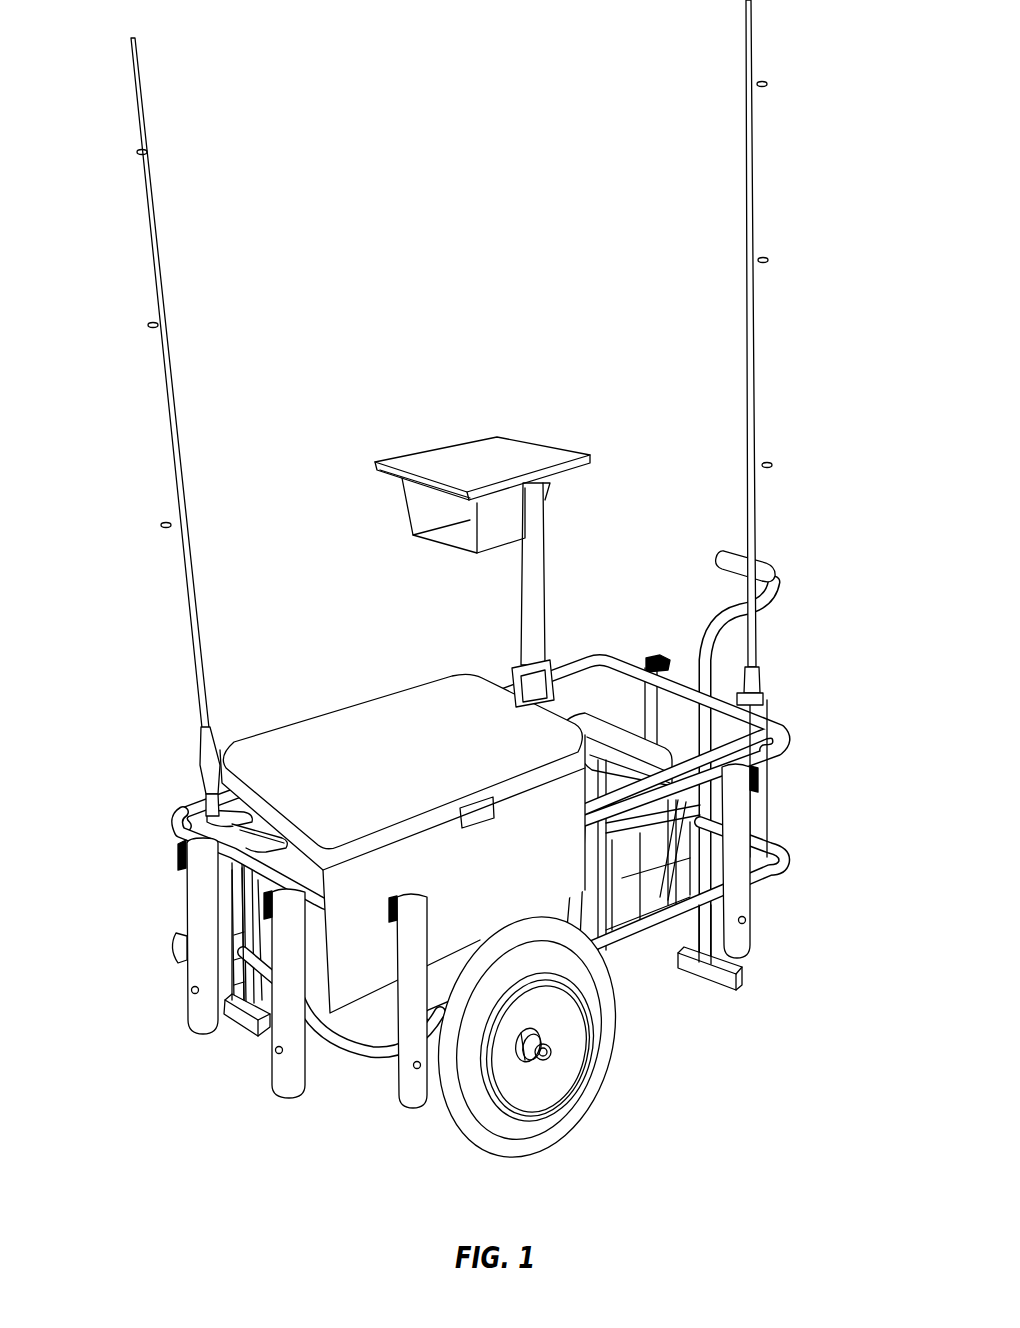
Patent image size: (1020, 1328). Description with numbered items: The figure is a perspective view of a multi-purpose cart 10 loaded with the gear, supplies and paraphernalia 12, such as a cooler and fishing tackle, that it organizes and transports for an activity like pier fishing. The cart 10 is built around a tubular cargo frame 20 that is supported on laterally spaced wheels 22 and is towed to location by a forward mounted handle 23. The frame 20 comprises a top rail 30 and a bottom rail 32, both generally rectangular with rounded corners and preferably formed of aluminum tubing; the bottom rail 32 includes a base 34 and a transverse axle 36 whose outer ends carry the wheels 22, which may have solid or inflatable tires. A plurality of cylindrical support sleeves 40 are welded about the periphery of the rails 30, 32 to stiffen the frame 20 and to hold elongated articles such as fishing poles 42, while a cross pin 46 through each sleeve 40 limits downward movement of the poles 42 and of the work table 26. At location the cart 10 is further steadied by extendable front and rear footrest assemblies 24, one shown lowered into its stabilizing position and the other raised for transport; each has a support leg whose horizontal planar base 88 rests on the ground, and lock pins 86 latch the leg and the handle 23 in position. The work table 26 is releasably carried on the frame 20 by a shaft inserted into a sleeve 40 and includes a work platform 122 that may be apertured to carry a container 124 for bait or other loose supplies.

The multi-purpose cart 10 is at (742, 1041).
The gear, supplies and paraphernalia 12 is at (300, 636).
The tubular cargo frame 20 is at (802, 852).
The wheels 22 is at (548, 1135).
The handle 23 is at (800, 600).
The footrest assembly 24 is at (754, 982).
The work table 26 is at (508, 610).
The top rail 30 is at (785, 737).
The bottom rail 32 is at (780, 868).
The base 34 is at (332, 1062).
The transverse axle 36 is at (553, 1044).
The cylindrical support sleeve 40 is at (204, 917).
The fishing poles 42 is at (163, 330).
The cross pin 46 is at (748, 920).
The lock pins 86 is at (238, 1005).
The horizontal planar base 88 is at (700, 978).
The work platform 122 is at (425, 455).
The container 124 is at (420, 513).